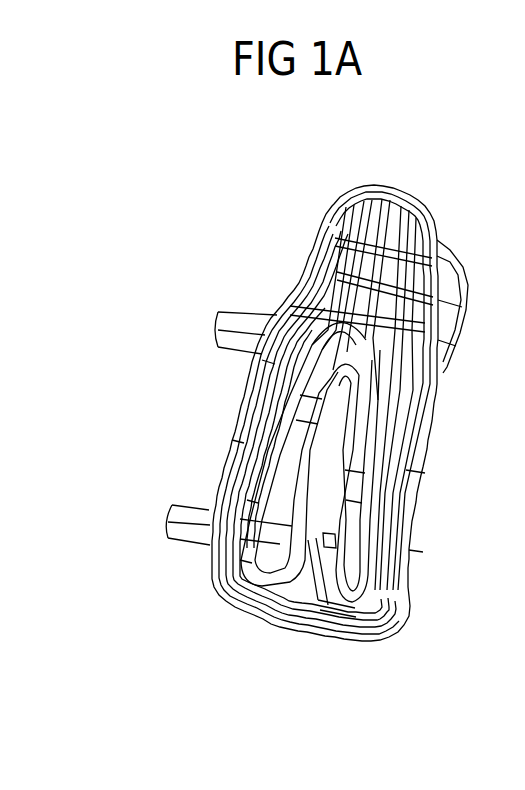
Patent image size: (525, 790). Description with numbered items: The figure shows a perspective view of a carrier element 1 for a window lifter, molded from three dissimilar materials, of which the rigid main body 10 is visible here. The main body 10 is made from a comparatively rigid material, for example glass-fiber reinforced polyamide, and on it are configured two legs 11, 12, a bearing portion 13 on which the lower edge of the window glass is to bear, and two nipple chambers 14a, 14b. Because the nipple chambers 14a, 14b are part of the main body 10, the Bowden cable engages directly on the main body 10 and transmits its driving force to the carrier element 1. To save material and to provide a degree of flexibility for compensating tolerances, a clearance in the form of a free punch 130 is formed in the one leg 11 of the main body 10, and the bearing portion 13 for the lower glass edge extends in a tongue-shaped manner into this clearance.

The carrier element 1 is at (256, 222).
The main body 10 is at (418, 614).
The leg 11 is at (344, 198).
The leg 12 is at (449, 262).
The bearing portion 13 is at (357, 457).
The free punch 130 is at (268, 432).
The nipple chamber 14a is at (232, 316).
The nipple chamber 14b is at (185, 533).